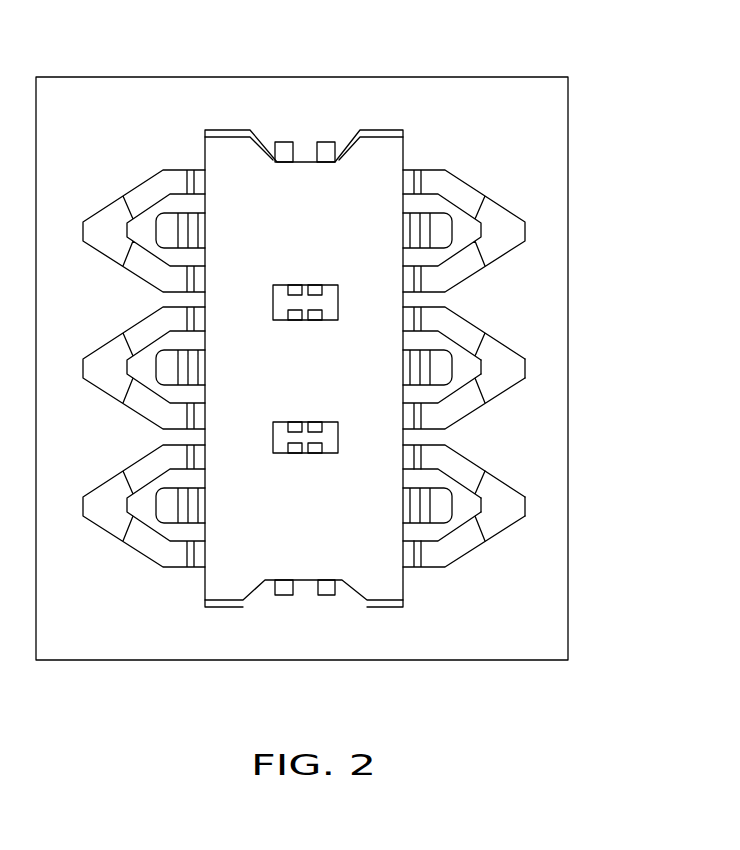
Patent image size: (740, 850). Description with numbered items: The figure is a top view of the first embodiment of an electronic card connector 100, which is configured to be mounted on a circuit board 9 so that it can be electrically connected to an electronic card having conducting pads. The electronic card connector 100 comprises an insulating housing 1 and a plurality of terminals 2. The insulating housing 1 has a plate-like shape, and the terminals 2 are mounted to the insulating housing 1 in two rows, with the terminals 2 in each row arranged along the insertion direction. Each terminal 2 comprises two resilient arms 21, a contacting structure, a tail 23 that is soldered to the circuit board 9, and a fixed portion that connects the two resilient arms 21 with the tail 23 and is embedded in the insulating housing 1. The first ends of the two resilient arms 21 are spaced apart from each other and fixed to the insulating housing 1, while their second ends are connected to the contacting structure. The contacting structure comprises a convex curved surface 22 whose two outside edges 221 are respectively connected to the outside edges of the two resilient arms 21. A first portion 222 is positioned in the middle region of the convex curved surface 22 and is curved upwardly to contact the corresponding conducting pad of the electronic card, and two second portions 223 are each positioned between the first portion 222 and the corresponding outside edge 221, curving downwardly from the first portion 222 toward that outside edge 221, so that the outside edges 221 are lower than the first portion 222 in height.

The electronic card connector 100 is at (231, 113).
The insulating housing 1 is at (377, 143).
The terminal 2 is at (524, 215).
The circuit board 9 is at (542, 123).
The resilient arm 21 is at (520, 366).
The convex curved surface 22 is at (559, 372).
The tail 23 is at (520, 385).
The outside edge 221 is at (527, 518).
The first portion 222 is at (566, 527).
The second portion 223 is at (527, 543).